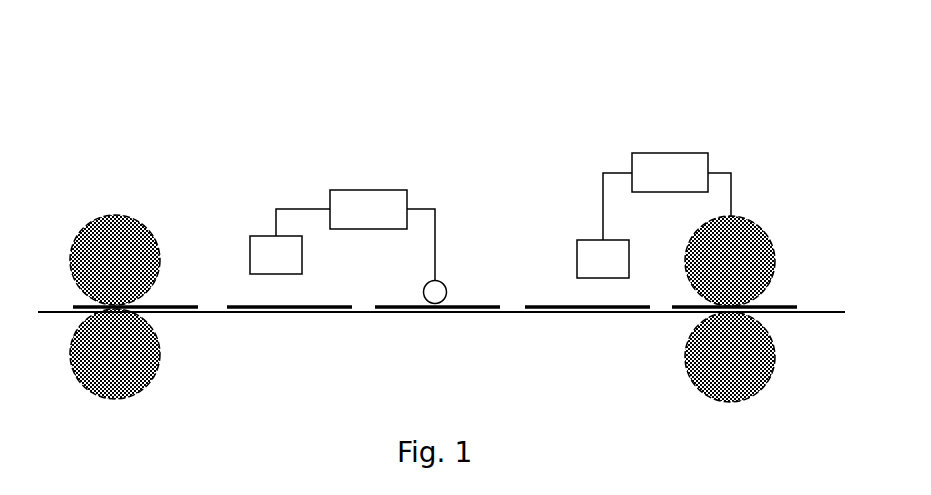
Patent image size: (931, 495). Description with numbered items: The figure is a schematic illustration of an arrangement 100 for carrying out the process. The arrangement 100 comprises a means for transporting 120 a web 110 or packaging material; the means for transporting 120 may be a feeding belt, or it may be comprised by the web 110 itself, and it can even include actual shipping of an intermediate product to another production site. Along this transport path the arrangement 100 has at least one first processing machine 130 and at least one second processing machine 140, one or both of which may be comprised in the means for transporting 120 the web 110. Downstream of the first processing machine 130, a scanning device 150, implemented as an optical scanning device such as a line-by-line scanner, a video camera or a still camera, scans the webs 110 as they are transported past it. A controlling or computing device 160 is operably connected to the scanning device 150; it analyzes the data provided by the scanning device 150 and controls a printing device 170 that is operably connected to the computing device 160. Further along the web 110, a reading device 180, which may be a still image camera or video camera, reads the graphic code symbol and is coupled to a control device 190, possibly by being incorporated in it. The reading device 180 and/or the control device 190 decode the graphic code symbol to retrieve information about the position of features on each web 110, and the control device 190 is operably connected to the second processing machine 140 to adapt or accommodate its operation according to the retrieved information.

The arrangement 100 is at (441, 276).
The web 110 is at (182, 305).
The means for transporting 120 is at (817, 313).
The first processing machine 130 is at (110, 237).
The second processing machine 140 is at (750, 247).
The scanning device 150 is at (252, 238).
The computing device 160 is at (407, 197).
The printing device 170 is at (443, 283).
The reading device 180 is at (585, 242).
The control device 190 is at (669, 153).